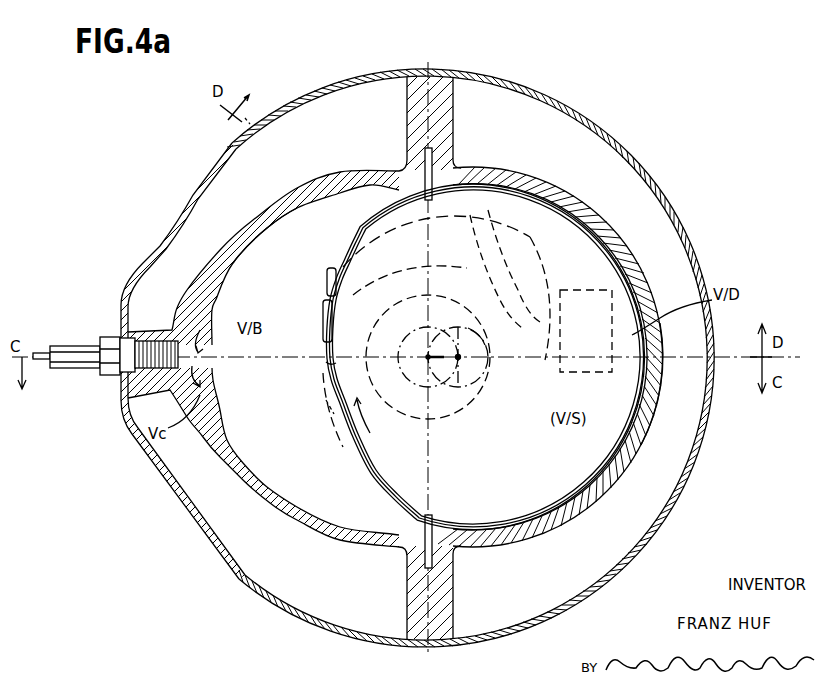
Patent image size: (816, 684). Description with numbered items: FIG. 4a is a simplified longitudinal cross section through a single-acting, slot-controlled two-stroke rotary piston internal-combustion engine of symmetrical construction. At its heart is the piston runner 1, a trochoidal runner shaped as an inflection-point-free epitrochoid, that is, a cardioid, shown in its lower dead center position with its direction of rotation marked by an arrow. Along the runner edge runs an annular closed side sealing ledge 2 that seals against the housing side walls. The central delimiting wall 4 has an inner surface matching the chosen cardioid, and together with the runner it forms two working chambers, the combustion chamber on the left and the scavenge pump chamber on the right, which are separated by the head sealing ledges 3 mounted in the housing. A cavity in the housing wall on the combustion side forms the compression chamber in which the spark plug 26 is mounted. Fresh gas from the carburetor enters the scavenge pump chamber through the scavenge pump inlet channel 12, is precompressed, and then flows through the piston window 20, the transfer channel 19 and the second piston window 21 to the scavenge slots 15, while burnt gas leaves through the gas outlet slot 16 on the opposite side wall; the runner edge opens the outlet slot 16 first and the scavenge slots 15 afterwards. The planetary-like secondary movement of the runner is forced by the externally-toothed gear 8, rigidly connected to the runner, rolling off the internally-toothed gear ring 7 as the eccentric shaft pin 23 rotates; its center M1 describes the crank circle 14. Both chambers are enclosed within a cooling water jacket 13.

The piston runner 1 is at (388, 460).
The side sealing ledge 2 is at (330, 366).
The head sealing ledges 3 is at (427, 198).
The delimiting wall 4 is at (334, 179).
The internally-toothed gear ring 7 is at (477, 390).
The externally-toothed gear 8 is at (477, 400).
The scavenge pump inlet channel 12 is at (520, 270).
The cooling water jacket 13 is at (195, 200).
The crank circle 14 is at (443, 385).
The scavenge or inlet slots 15 is at (328, 300).
The gas outlet slot 16 is at (330, 407).
The transfer channel 19 is at (600, 246).
The piston window 20 is at (628, 275).
The second piston window 21 is at (474, 190).
The eccentric shaft pin 23 is at (462, 340).
The spark plug 26 is at (72, 370).
The eccentric pin center M1 is at (459, 358).